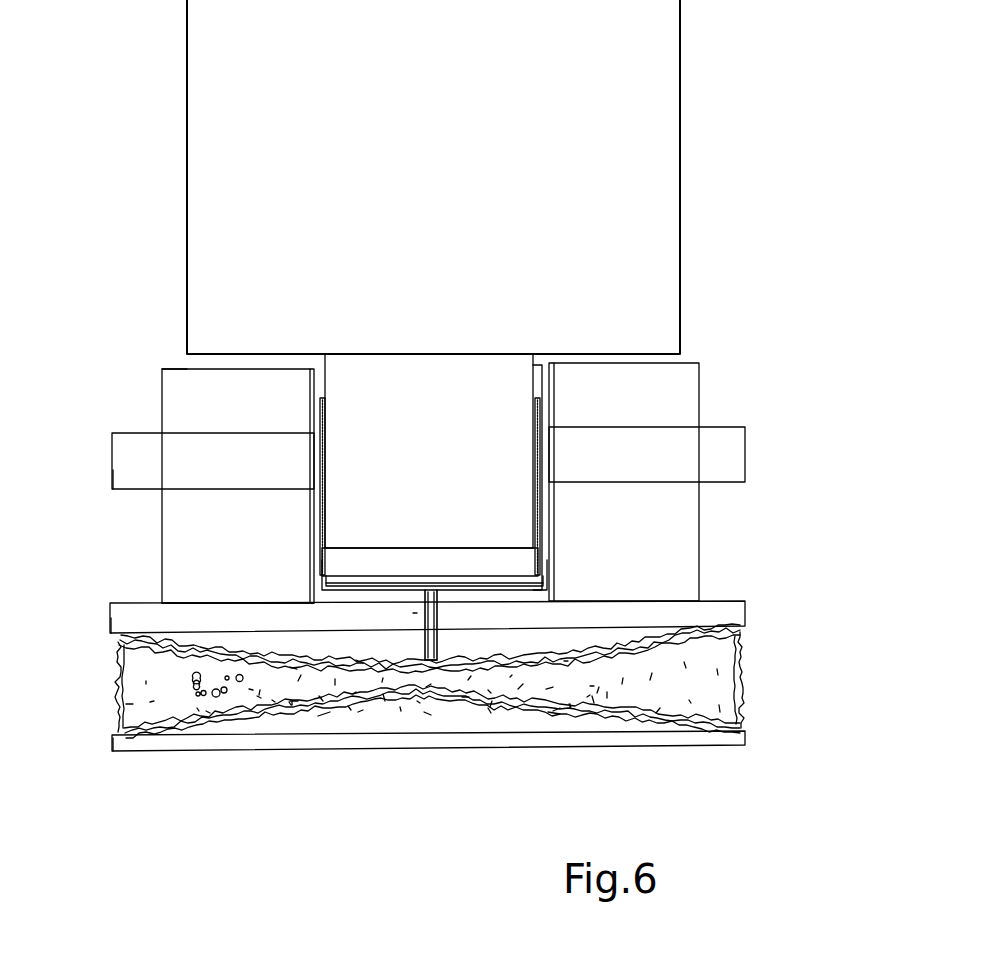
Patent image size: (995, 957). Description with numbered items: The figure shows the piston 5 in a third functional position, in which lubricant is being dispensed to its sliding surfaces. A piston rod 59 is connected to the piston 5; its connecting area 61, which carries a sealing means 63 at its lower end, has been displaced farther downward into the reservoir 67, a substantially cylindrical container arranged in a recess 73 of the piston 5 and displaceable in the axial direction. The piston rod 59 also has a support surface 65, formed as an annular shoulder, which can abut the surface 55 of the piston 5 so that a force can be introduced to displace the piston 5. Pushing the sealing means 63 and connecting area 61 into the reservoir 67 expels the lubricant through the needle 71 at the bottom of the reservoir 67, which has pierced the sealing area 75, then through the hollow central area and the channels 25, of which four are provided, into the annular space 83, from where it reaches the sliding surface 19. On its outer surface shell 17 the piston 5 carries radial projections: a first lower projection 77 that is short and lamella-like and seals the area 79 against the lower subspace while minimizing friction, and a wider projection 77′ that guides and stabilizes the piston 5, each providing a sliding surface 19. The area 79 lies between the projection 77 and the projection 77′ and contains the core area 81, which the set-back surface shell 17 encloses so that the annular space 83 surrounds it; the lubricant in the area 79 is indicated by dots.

The piston rod 59 is at (640, 97).
The connecting area 61 is at (487, 395).
The reservoir 67 is at (543, 513).
The sealing means 63 is at (527, 563).
The recess 73 is at (553, 578).
The support surface 65 is at (655, 354).
The outer surface shell 17 is at (160, 392).
The piston 5 is at (207, 575).
The sliding surface 19 is at (112, 468).
The projection 77′ is at (118, 633).
The first lower projection 77 is at (125, 745).
The needle 71 is at (437, 608).
The area 79 is at (752, 658).
The core area 81 is at (322, 718).
The annular space 83 is at (553, 713).
The sealing area 75 is at (413, 615).
The channel 25 is at (427, 690).
The surface 55 is at (175, 368).